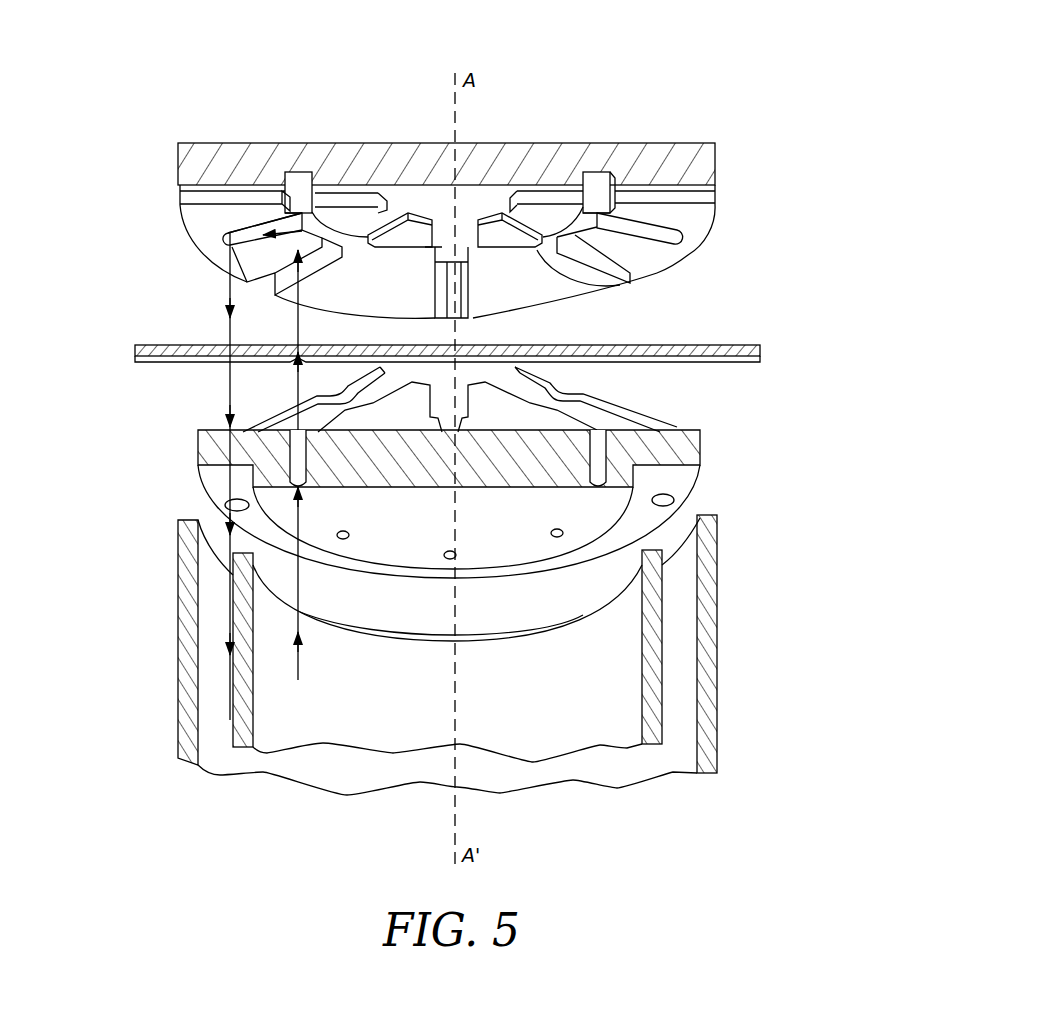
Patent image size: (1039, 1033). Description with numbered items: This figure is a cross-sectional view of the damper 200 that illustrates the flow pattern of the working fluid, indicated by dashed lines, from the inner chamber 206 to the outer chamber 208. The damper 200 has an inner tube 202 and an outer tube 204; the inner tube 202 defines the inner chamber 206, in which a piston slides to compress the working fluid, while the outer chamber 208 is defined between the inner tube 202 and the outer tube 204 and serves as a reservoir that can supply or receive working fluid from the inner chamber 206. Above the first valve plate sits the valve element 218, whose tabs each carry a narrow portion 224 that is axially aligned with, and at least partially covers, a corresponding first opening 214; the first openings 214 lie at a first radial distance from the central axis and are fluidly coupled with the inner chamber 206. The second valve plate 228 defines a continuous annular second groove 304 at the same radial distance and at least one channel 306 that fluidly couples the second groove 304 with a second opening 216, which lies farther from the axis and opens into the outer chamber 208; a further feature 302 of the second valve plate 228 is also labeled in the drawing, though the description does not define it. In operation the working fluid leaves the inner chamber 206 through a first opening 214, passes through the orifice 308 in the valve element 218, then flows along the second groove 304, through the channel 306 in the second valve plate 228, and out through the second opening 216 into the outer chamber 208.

The damper 200 is at (903, 85).
The second valve plate 228 is at (730, 158).
The flange 302 is at (715, 200).
The channel 306 is at (672, 243).
The second groove 304 is at (540, 256).
The valve element 218 is at (768, 347).
The orifice 308 is at (575, 387).
The narrow portion 224 is at (600, 392).
The first opening 214 is at (650, 441).
The second opening 216 is at (665, 507).
The outer tube 204 is at (718, 580).
The outer chamber 208 is at (673, 640).
The inner tube 202 is at (660, 668).
The inner chamber 206 is at (585, 705).